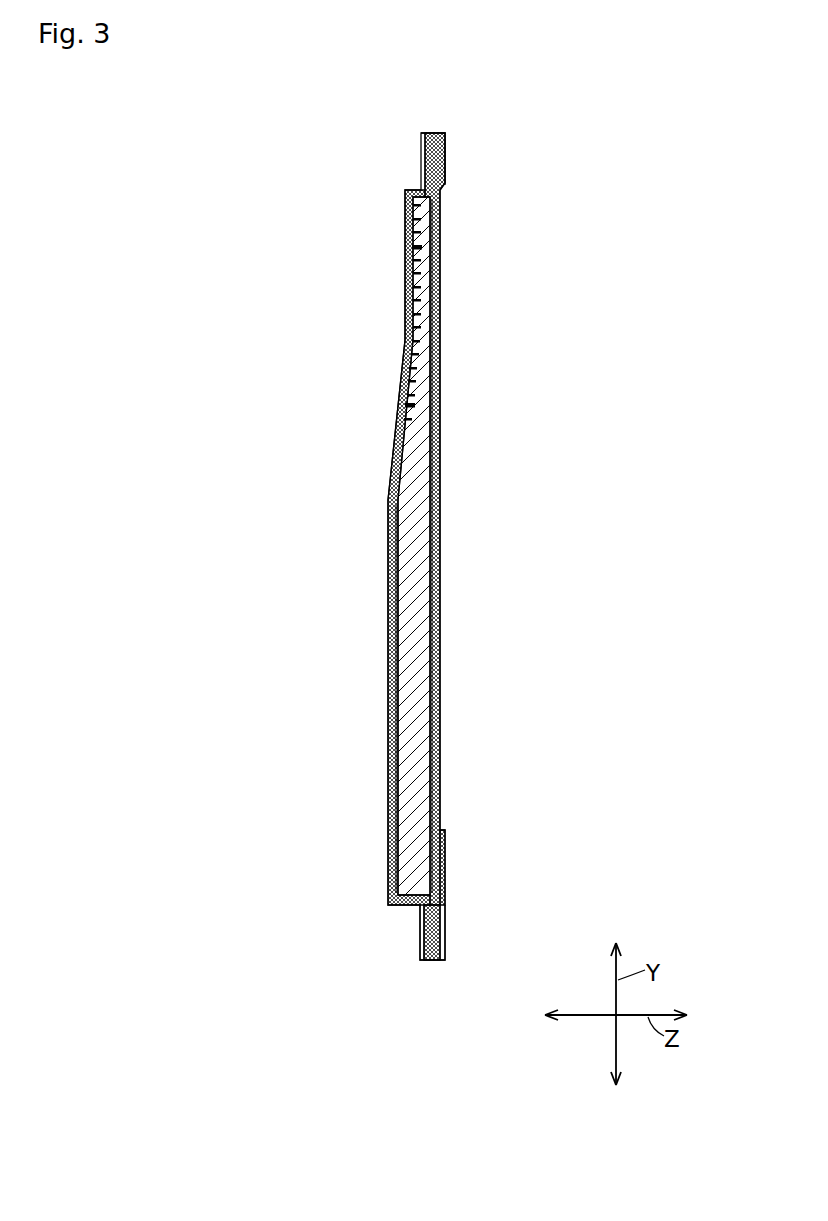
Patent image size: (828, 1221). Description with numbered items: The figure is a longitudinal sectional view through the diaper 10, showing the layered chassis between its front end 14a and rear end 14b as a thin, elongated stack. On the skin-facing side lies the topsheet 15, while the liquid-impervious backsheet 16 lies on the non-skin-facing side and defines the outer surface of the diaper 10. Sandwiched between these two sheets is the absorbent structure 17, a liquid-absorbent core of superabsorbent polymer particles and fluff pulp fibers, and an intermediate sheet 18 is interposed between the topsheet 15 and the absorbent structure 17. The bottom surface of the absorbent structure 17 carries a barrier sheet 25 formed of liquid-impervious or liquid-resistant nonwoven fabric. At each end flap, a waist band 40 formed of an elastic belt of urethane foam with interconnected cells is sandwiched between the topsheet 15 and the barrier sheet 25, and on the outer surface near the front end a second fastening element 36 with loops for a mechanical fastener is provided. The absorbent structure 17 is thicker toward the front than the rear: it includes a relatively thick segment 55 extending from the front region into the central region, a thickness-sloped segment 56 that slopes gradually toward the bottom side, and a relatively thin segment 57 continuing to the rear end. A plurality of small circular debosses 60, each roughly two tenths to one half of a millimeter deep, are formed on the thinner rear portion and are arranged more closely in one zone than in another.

The diaper 10 is at (508, 133).
The front end 14a is at (431, 960).
The rear end 14b is at (434, 133).
The topsheet 15 is at (390, 580).
The backsheet 16 is at (438, 225).
The absorbent structure 17 is at (415, 680).
The intermediate sheet 18 is at (395, 625).
The barrier sheet 25 is at (432, 642).
The second fastening element 36 is at (447, 860).
The waist band 40 is at (445, 160).
The relatively thick segment 55 is at (410, 733).
The thickness-sloped segment 56 is at (418, 474).
The relatively thin segment 57 is at (425, 270).
The debosses 60 is at (415, 250).